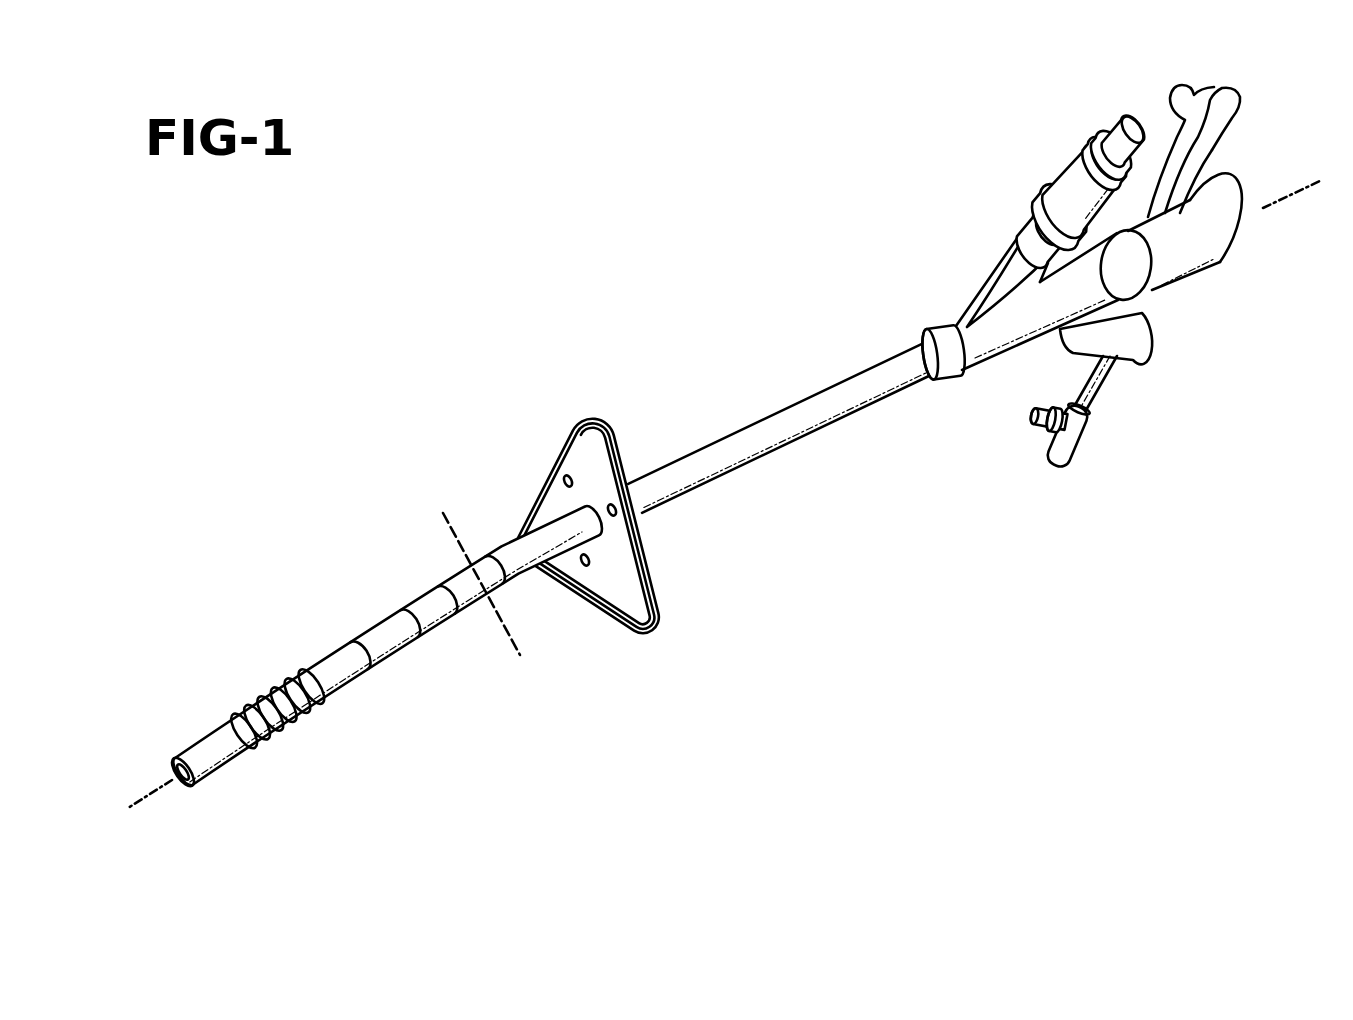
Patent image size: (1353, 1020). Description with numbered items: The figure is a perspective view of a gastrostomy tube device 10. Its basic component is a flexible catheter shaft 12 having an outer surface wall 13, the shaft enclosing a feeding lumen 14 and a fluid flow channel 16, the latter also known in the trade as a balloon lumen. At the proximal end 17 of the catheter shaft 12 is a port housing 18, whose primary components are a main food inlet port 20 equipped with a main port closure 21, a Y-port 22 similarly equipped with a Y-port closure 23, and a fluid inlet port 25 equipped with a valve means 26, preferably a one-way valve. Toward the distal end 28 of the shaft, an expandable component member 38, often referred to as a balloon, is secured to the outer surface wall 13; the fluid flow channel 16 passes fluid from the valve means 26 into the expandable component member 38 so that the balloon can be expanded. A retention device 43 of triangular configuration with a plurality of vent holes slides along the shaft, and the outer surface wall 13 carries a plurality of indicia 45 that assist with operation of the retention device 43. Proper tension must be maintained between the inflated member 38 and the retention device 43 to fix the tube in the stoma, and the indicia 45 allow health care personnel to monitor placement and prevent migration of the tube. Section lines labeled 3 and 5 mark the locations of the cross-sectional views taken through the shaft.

The gastrostomy tube device 10 is at (774, 383).
The catheter shaft 12 is at (821, 426).
The outer surface wall 13 is at (741, 451).
The feeding lumen 14 is at (170, 767).
The fluid flow channel 16 is at (273, 694).
The proximal end 17 is at (922, 334).
The port housing 18 is at (1182, 255).
The main food inlet port 20 is at (1228, 232).
The main port closure 21 is at (1225, 118).
The Y-port 22 is at (1158, 350).
The Y-port closure 23 is at (1076, 441).
The fluid inlet port 25 is at (1027, 160).
The valve means 26 is at (1119, 137).
The distal end 28 is at (215, 737).
The expandable component member 38 is at (271, 735).
The retention device 43 is at (573, 453).
The indicia 45 is at (363, 640).
The section line 3- 3 is at (443, 513).
The section line 5- 5 is at (128, 808).